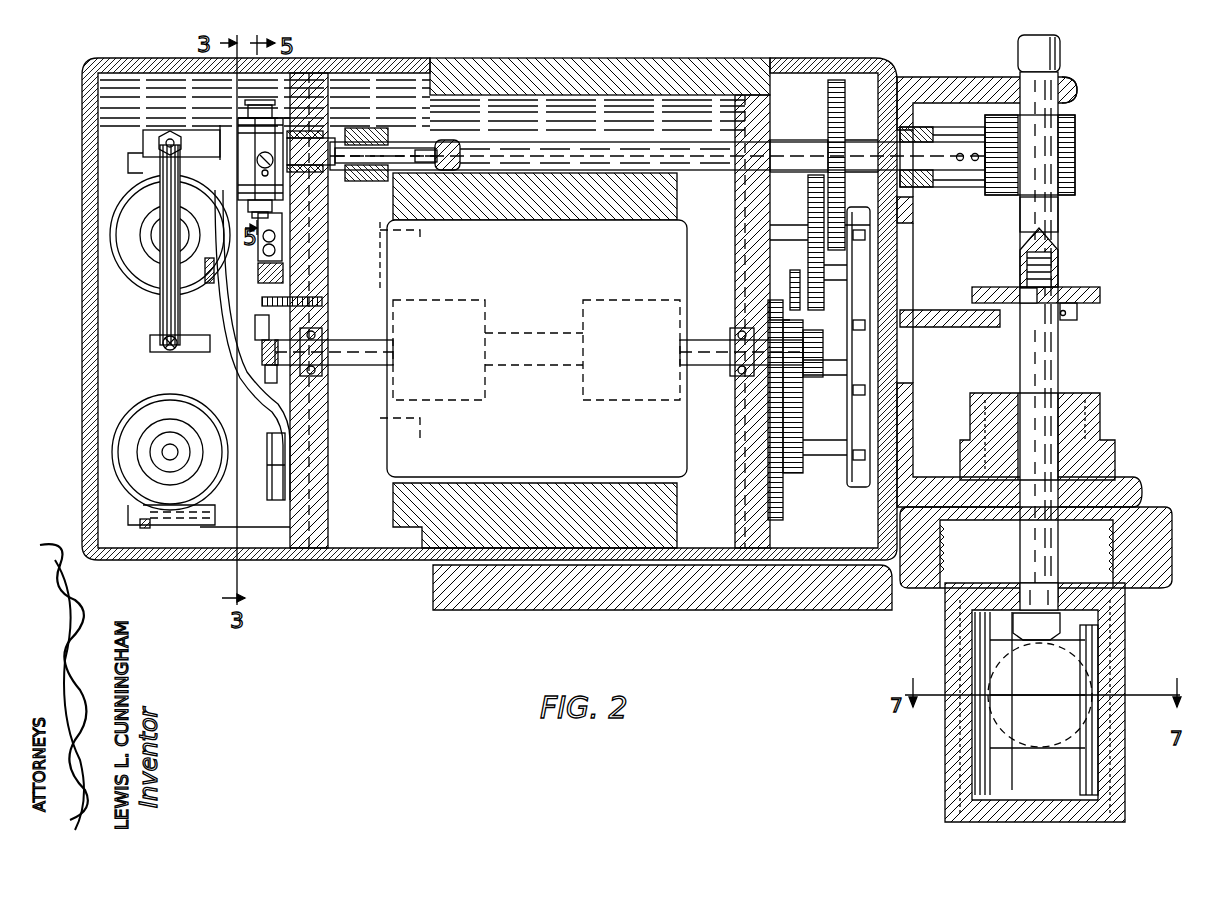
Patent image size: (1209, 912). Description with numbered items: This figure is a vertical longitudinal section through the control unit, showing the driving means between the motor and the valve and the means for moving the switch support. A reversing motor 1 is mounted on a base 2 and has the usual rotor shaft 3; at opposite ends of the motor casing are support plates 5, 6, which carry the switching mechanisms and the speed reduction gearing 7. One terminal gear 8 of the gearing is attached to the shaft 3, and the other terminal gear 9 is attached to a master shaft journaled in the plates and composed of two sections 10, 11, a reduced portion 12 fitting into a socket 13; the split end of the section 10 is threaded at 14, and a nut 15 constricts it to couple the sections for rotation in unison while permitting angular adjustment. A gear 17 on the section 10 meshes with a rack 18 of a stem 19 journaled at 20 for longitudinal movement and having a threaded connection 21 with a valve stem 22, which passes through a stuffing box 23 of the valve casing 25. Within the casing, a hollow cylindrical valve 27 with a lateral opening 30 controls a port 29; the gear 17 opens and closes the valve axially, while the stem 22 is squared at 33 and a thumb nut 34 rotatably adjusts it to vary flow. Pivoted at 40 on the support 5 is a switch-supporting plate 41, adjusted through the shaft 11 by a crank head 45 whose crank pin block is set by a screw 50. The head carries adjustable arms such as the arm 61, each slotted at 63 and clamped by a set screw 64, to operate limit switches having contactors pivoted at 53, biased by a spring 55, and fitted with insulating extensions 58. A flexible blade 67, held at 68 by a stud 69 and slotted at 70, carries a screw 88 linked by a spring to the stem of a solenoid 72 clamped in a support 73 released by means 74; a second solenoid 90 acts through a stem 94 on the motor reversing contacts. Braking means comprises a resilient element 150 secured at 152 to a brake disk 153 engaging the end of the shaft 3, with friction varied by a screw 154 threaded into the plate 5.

The reversing motor 1 is at (533, 360).
The base 2 is at (478, 612).
The rotor shaft 3 is at (356, 342).
The plate 5 is at (300, 95).
The plate 6 is at (757, 78).
The reduction gearing 7 is at (745, 290).
The terminal gear 8 is at (735, 312).
The terminal gear 9 is at (836, 88).
The shaft section 10 is at (598, 157).
The shaft section 11 is at (328, 150).
The reduced portion 12 is at (420, 150).
The socket 13 is at (445, 148).
The threaded portion 14 is at (396, 146).
The nut 15 is at (372, 130).
The gear 17 is at (1077, 140).
The rack 18 is at (1050, 216).
The stem 19 is at (1062, 55).
The journal 20 is at (1078, 90).
The threaded connection 21 is at (1056, 264).
The valve stem 22 is at (1050, 380).
The stuffing box 23 is at (1108, 462).
The valve casing 25 is at (1158, 545).
The valve 27 is at (1112, 640).
The valve port 29 is at (1078, 727).
The lateral opening 30 is at (1087, 775).
The squared portion 33 is at (1020, 292).
The thumb nut 34 is at (1102, 295).
The pivot 40 is at (270, 480).
The switch-supporting plate 41 is at (226, 372).
The crank head 45 is at (240, 147).
The screw 50 is at (262, 108).
The pivot 53 is at (262, 274).
The spring 55 is at (284, 270).
The extension 58 is at (272, 222).
The adjustable arm 61 is at (284, 124).
The slot 63 is at (268, 173).
The set screw 64 is at (262, 158).
The flexible blade 67 is at (150, 263).
The blade mounting 68 is at (155, 344).
The stud 69 is at (178, 353).
The slot 70 is at (165, 326).
The solenoid 72 is at (120, 237).
The solenoid support 73 is at (207, 530).
The releasing means 74 is at (130, 163).
The screw 88 is at (165, 237).
The solenoid 90 is at (122, 445).
The stem 94 is at (165, 453).
The resilient element 150 is at (262, 306).
The brake disk attachment 152 is at (262, 352).
The brake disk 153 is at (268, 370).
The screw 154 is at (383, 290).